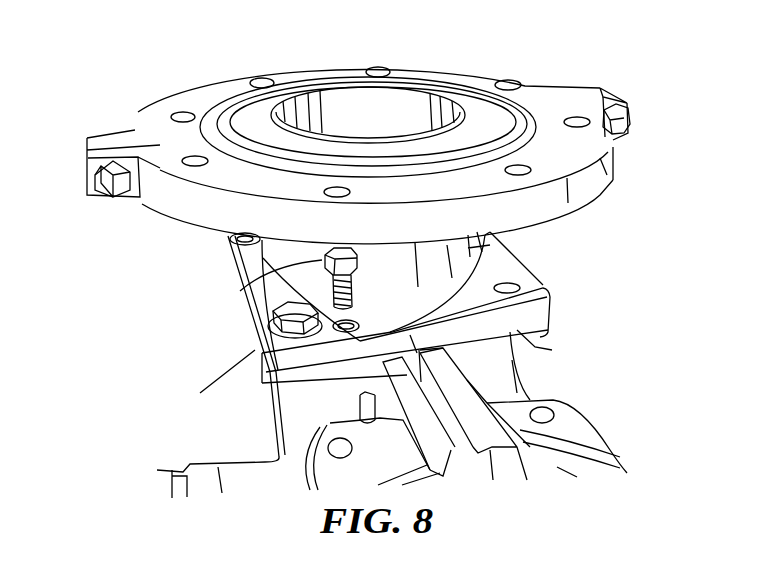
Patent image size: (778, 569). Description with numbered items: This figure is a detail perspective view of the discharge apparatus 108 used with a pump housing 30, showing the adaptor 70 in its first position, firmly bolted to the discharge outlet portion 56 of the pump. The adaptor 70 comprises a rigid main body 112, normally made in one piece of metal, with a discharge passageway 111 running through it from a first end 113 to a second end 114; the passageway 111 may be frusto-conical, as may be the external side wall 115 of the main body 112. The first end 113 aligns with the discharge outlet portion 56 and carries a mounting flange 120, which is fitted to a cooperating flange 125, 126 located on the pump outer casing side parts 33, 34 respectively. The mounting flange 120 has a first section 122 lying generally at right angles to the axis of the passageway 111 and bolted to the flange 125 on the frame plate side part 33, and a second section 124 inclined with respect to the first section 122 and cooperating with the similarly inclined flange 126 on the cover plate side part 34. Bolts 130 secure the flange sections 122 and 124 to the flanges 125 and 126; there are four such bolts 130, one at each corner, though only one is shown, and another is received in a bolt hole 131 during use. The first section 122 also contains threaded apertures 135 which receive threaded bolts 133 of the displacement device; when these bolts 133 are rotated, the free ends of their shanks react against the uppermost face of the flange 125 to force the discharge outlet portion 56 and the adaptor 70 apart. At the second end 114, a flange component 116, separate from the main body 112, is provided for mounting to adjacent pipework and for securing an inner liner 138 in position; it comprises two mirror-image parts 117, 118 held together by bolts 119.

The discharge apparatus 108 is at (645, 85).
The pump housing 30 is at (545, 382).
The pump outer casing side part (frame plate) 33 is at (156, 487).
The pump outer casing side part (cover plate) 34 is at (562, 422).
The discharge outlet portion 56 is at (547, 325).
The adaptor 70 is at (478, 247).
The discharge passageway 111 is at (423, 110).
The main body 112 is at (290, 258).
The first end 113 is at (255, 352).
The second end 114 is at (267, 112).
The external side wall 115 is at (292, 260).
The flange component 116 is at (200, 205).
The flange component part 117 is at (532, 93).
The flange component part 118 is at (612, 163).
The bolts 119 is at (117, 178).
The mounting flange 120 is at (253, 380).
The first section 122 is at (545, 283).
The second section 124 is at (512, 292).
The flange 125 is at (263, 393).
The flange 126 is at (543, 340).
The bolts 130 is at (278, 325).
The bolt hole 131 is at (230, 238).
The threaded bolts 133 is at (255, 246).
The threaded apertures 135 is at (345, 334).
The inner liner 138 is at (281, 97).